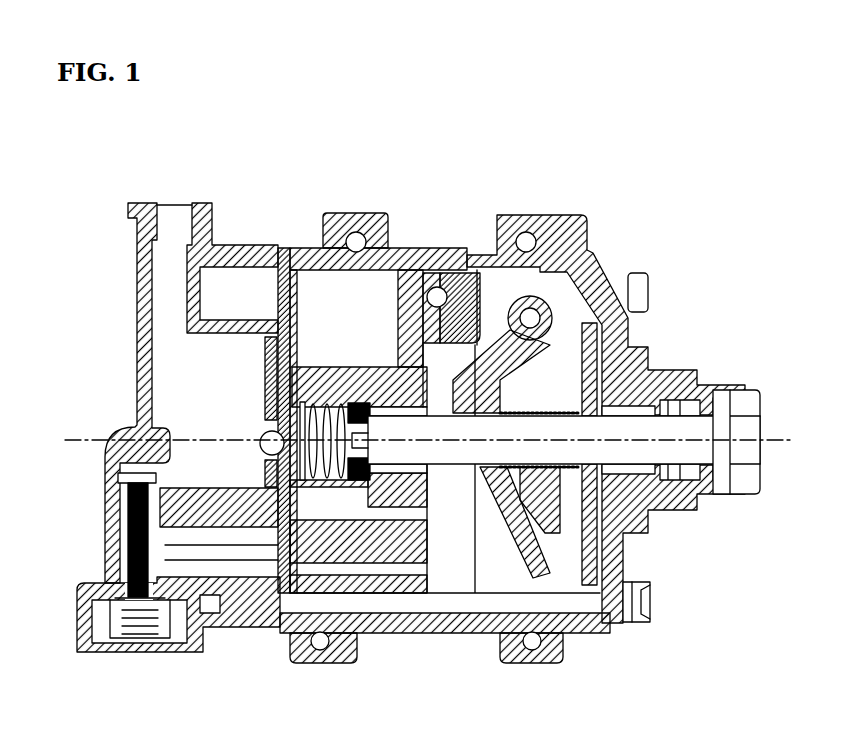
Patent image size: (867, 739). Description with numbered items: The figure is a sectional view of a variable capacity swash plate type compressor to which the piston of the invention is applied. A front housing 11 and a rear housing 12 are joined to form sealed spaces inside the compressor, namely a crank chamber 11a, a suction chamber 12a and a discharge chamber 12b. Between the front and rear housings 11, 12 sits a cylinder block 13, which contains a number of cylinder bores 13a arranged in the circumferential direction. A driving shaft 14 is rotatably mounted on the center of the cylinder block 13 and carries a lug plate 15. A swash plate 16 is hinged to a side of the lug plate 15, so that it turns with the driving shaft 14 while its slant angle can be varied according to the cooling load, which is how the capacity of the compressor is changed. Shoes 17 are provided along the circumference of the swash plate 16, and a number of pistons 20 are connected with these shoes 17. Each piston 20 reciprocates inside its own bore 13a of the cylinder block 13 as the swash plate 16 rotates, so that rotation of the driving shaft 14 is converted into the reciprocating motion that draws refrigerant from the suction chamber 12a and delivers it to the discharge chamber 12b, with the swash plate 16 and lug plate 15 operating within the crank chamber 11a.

The front housing 11 is at (566, 215).
The crank chamber 11a is at (577, 300).
The rear housing 12 is at (140, 348).
The suction chamber 12a is at (229, 292).
The discharge chamber 12b is at (188, 398).
The cylinder block 13 is at (395, 556).
The cylinder bore 13a is at (418, 355).
The driving shaft 14 is at (683, 432).
The lug plate 15 is at (600, 585).
The swash plate 16 is at (533, 580).
The shoe 17 is at (414, 270).
The piston 20 is at (445, 276).